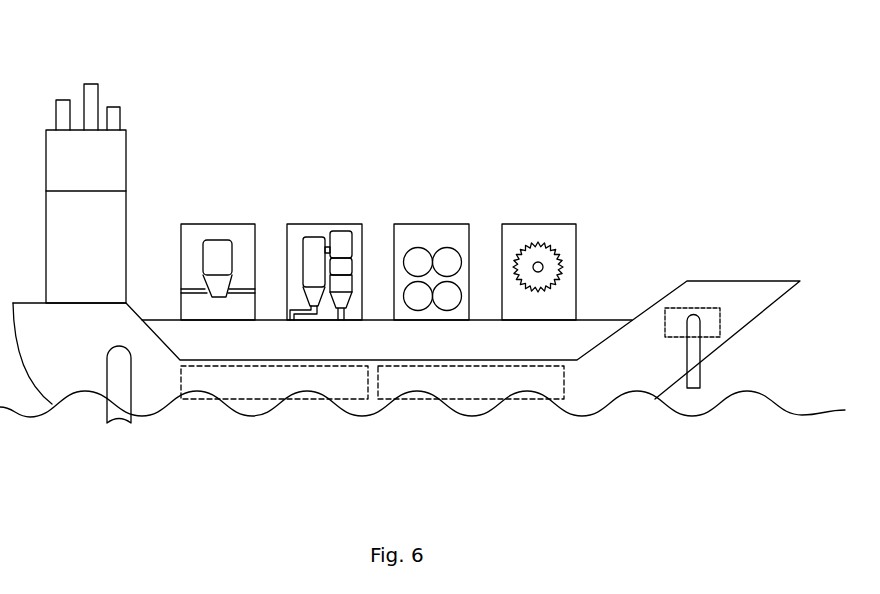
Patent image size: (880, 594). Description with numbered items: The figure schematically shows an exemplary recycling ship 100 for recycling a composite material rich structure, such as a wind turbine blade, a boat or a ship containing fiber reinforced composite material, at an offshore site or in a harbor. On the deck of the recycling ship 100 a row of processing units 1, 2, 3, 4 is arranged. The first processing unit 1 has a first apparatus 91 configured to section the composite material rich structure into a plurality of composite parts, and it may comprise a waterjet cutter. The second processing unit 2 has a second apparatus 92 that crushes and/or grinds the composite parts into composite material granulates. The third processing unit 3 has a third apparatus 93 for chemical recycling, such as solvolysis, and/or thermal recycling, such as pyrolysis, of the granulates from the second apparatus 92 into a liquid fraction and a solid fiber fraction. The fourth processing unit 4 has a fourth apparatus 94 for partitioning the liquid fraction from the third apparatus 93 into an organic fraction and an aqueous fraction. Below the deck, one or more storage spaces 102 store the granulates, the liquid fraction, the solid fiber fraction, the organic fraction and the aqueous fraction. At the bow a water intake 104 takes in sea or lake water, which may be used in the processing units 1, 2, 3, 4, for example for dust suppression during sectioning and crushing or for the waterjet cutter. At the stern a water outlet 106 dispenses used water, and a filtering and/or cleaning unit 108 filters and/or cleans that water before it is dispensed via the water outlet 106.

The recycling ship 100 is at (742, 80).
The first processing unit 1 is at (574, 232).
The second processing unit 2 is at (448, 232).
The third processing unit 3 is at (341, 232).
The fourth processing unit 4 is at (231, 232).
The first apparatus 91 is at (556, 267).
The second apparatus 92 is at (443, 250).
The third apparatus 93 is at (341, 245).
The fourth apparatus 94 is at (230, 242).
The storage spaces 102 is at (563, 377).
The water intake 104 is at (118, 367).
The water outlet 106 is at (693, 350).
The filtering and/or cleaning unit 108 is at (705, 320).